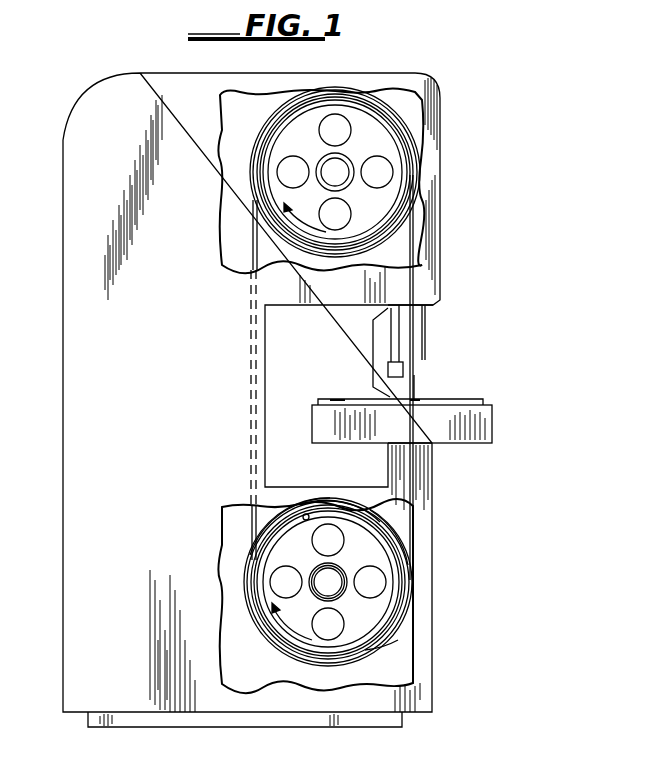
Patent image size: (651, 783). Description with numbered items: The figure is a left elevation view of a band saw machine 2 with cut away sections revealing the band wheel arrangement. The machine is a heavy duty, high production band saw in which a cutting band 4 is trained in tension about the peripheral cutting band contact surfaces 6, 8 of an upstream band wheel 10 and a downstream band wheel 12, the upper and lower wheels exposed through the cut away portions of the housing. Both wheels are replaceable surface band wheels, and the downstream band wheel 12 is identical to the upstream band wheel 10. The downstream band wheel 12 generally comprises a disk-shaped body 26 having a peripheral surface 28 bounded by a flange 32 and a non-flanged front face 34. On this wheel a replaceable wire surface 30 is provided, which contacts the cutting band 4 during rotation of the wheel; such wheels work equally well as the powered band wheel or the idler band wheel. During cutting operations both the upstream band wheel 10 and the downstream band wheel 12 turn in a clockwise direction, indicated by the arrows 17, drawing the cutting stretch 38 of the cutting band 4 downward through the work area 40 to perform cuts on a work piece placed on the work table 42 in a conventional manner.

The band saw machine 2 is at (445, 172).
The cutting band 4 is at (413, 383).
The peripheral cutting band contact surface 6 is at (256, 212).
The peripheral cutting band contact surface 8 is at (278, 510).
The upstream band wheel 10 is at (385, 201).
The downstream band wheel 12 is at (365, 557).
The arrows 17 is at (299, 417).
The disk-shaped body 26 is at (371, 620).
The peripheral surface 28 is at (375, 636).
The replaceable wire surface 30 is at (368, 517).
The flange 32 is at (390, 523).
The non-flanged front face 34 is at (305, 520).
The cutting stretch 38 is at (373, 352).
The work area 40 is at (418, 388).
The work table 42 is at (470, 397).